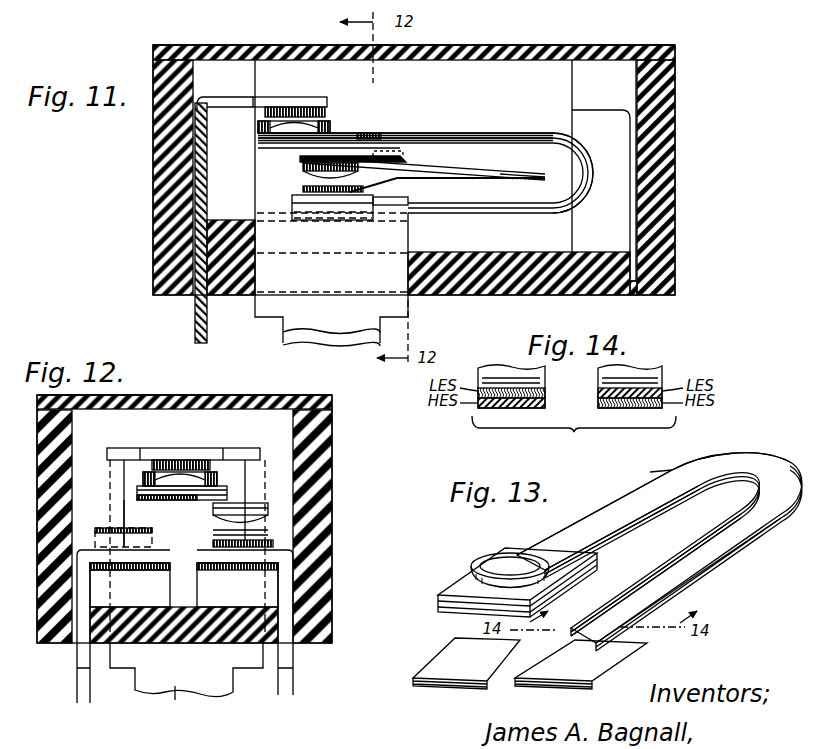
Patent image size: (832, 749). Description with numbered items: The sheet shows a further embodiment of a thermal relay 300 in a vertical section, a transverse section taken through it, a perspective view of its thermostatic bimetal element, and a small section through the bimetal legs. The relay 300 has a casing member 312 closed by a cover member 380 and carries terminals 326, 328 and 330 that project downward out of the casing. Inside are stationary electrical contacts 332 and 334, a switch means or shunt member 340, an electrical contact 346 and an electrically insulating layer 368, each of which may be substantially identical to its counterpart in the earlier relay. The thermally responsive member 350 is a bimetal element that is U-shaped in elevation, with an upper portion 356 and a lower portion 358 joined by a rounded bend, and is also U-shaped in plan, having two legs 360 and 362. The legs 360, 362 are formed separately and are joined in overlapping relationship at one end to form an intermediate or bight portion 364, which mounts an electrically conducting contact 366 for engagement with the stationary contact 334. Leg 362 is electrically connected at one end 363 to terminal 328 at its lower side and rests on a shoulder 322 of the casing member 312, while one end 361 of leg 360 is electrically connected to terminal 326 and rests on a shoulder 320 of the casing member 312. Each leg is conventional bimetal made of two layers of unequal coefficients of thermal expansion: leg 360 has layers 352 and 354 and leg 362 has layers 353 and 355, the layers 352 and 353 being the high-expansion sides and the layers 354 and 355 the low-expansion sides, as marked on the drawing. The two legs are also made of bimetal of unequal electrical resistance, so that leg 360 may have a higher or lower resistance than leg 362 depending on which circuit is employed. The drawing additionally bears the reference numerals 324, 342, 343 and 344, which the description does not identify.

In FIG. 11, the thermal relay 300 is at (692, 74).
In FIG. 12, the thermal relay 300 is at (344, 465).
In FIG. 11, the casing member 312 is at (668, 158).
In FIG. 12, the casing member 312 is at (325, 522).
In FIG. 11, the shoulder 320 is at (231, 219).
In FIG. 12, the shoulder 320 is at (340, 548).
In FIG. 12, the shoulder 322 is at (93, 568).
In FIG. 11, the lead 324 is at (221, 107).
In FIG. 12, the lead 324 is at (111, 455).
In FIG. 11, the terminal 326 is at (285, 340).
In FIG. 12, the terminal 326 is at (296, 662).
In FIG. 11, the terminal 328 is at (408, 305).
In FIG. 12, the terminal 328 is at (76, 660).
In FIG. 11, the terminal 330 is at (194, 313).
In FIG. 12, the terminal 330 is at (214, 452).
In FIG. 11, the stationary electrical contact 332 is at (303, 189).
In FIG. 12, the stationary electrical contact 332 is at (213, 545).
In FIG. 11, the stationary electrical contact 334 is at (298, 107).
In FIG. 12, the stationary electrical contact 334 is at (176, 460).
In FIG. 11, the switch means or shunt member 340 is at (502, 177).
In FIG. 11, the terminal block 342 is at (384, 203).
In FIG. 12, the terminal block 342 is at (95, 534).
In FIG. 11, the lead 343 is at (420, 181).
In FIG. 12, the lead 343 is at (135, 540).
In FIG. 11, the spring arm 344 is at (436, 170).
In FIG. 12, the spring arm 344 is at (213, 530).
In FIG. 11, the electrical contact 346 is at (303, 171).
In FIG. 12, the electrical contact 346 is at (213, 535).
In FIG. 11, the thermally responsive member 350 is at (479, 130).
In FIG. 12, the thermally responsive member 350 is at (134, 491).
In FIG. 13, the thermally responsive member 350 is at (735, 613).
In FIG. 11, the layer 352 is at (486, 136).
In FIG. 14, the layer 352 is at (545, 404).
In FIG. 13, the layer 352 is at (652, 480).
In FIG. 14, the layer 353 is at (600, 402).
In FIG. 13, the layer 353 is at (740, 560).
In FIG. 11, the layer 354 is at (486, 148).
In FIG. 14, the layer 354 is at (545, 390).
In FIG. 13, the layer 354 is at (617, 520).
In FIG. 14, the layer 355 is at (600, 390).
In FIG. 13, the layer 355 is at (760, 540).
In FIG. 11, the upper portion 356 is at (395, 131).
In FIG. 13, the upper portion 356 is at (659, 468).
In FIG. 11, the lower portion 358 is at (506, 224).
In FIG. 13, the lower portion 358 is at (699, 579).
In FIG. 11, the leg 360 is at (408, 136).
In FIG. 13, the leg 360 is at (556, 528).
In FIG. 12, the end 361 is at (241, 570).
In FIG. 13, the end 361 is at (462, 660).
In FIG. 11, the leg 362 is at (438, 140).
In FIG. 13, the leg 362 is at (725, 473).
In FIG. 12, the end 363 is at (120, 570).
In FIG. 13, the end 363 is at (612, 648).
In FIG. 11, the intermediate or bight portion 364 is at (343, 136).
In FIG. 13, the intermediate or bight portion 364 is at (562, 560).
In FIG. 11, the electrically conducting contact 366 is at (318, 124).
In FIG. 12, the electrically conducting contact 366 is at (151, 474).
In FIG. 13, the electrically conducting contact 366 is at (495, 563).
In FIG. 11, the electrically insulating layer 368 is at (300, 157).
In FIG. 12, the electrically insulating layer 368 is at (260, 504).
In FIG. 11, the cover member 380 is at (545, 45).
In FIG. 12, the cover member 380 is at (230, 396).